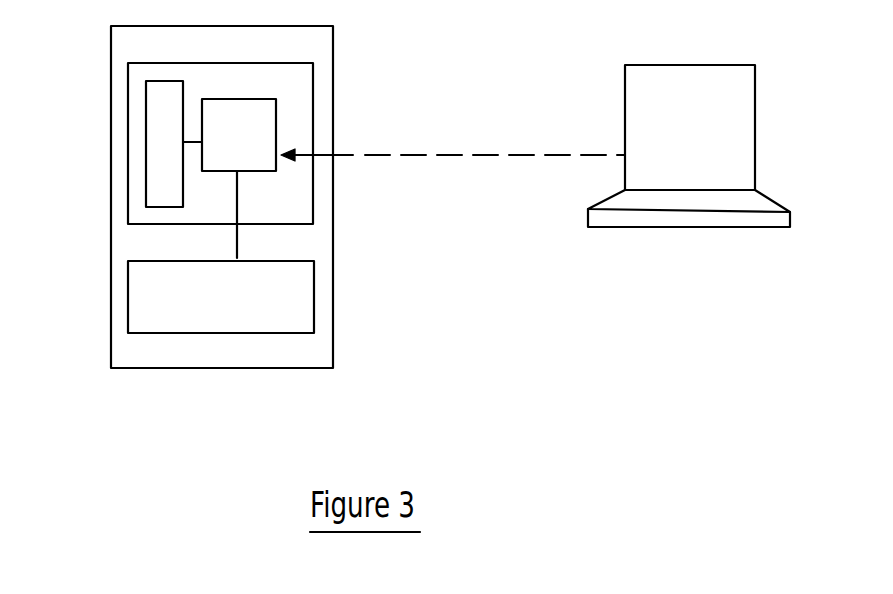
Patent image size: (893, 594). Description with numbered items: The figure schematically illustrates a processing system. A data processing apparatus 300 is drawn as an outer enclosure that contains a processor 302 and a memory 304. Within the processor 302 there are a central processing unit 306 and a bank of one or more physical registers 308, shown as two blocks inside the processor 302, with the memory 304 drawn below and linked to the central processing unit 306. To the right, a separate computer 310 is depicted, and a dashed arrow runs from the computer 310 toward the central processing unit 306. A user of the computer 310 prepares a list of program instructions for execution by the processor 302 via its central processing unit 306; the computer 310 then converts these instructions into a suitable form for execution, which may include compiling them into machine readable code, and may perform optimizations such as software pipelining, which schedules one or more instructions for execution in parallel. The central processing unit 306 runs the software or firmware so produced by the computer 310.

The data processing apparatus 300 is at (140, 368).
The processor 302 is at (125, 167).
The memory 304 is at (134, 303).
The central processing unit 306 is at (276, 133).
The bank of physical registers 308 is at (146, 119).
The computer 310 is at (720, 227).